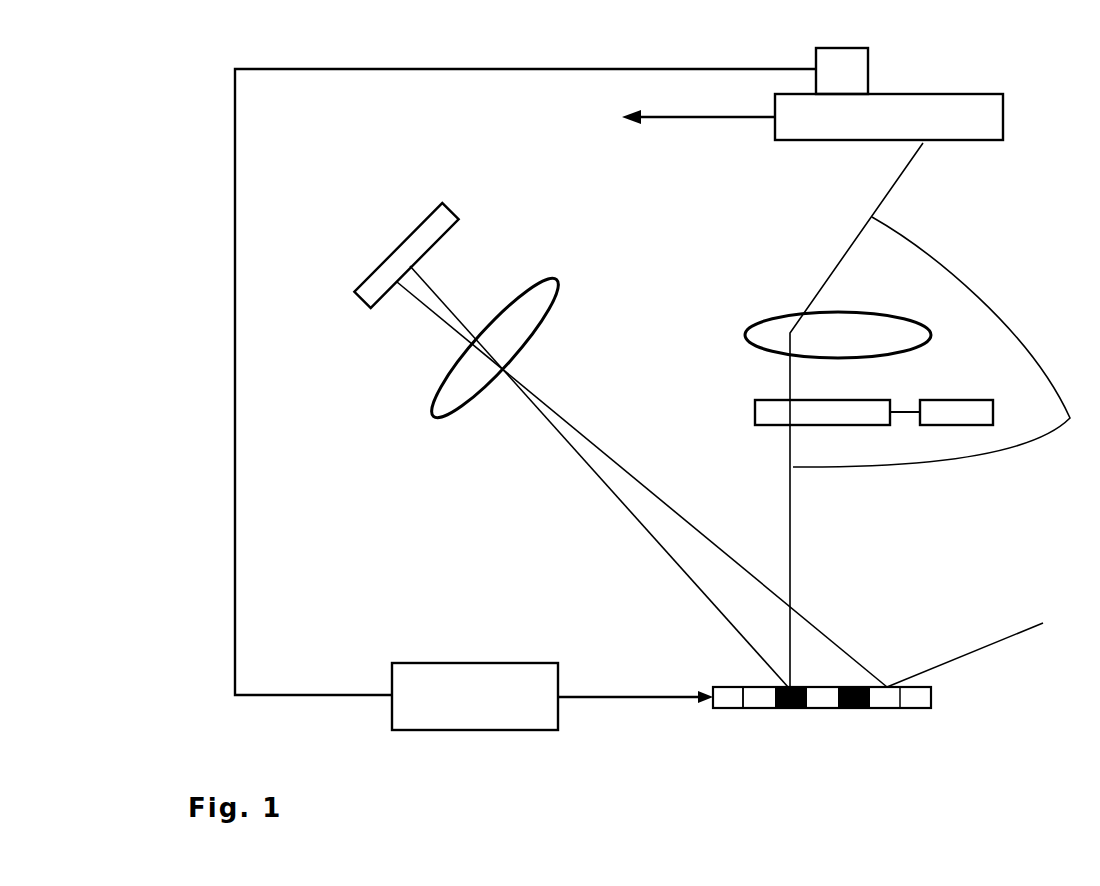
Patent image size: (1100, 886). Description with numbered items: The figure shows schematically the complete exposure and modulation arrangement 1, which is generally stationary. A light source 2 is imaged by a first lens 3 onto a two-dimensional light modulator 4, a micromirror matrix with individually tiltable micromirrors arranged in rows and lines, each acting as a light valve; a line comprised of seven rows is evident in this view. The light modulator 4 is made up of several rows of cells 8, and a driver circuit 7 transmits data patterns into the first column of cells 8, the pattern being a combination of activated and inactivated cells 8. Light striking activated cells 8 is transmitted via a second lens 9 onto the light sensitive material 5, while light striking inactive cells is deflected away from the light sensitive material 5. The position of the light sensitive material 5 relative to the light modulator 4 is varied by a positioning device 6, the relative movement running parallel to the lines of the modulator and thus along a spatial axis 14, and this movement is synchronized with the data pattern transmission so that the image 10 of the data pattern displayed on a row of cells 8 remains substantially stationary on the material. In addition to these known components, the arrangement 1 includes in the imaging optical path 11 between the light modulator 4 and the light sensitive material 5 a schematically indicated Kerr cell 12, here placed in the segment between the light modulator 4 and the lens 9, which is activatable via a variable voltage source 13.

The exposure and modulation arrangement 1 is at (1012, 768).
The light source 2 is at (385, 258).
The first lens 3 is at (560, 277).
The light modulator 4 is at (931, 700).
The light sensitive material 5 is at (1003, 120).
The positioning device 6 is at (870, 63).
The driver circuit 7 is at (410, 730).
The cells 8 is at (728, 699).
The second lens 9 is at (925, 325).
The image of the data pattern 10 is at (923, 143).
The imaging optical path 11 is at (946, 342).
The Kerr cell 12 is at (822, 414).
The variable voltage source 13 is at (956, 414).
The spatial axis 14 is at (680, 118).